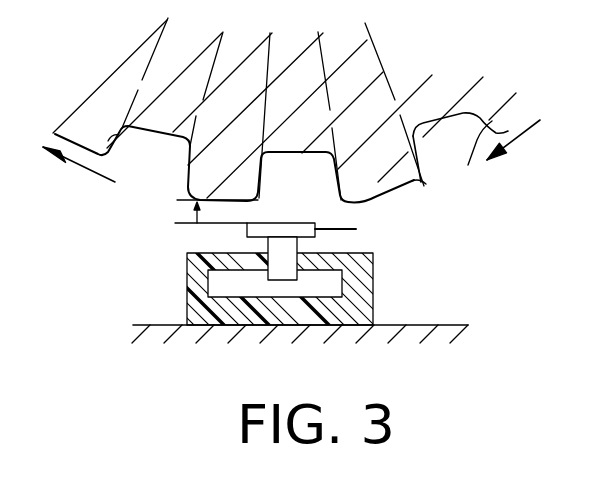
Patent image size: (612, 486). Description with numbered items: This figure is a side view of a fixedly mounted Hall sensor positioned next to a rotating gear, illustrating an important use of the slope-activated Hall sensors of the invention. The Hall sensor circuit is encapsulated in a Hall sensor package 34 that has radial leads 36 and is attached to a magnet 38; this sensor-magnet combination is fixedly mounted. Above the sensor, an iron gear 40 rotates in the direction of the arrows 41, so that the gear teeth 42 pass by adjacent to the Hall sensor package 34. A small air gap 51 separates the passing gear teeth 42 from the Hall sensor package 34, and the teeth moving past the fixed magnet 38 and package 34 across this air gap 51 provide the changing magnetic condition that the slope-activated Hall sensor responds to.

The Hall sensor package 34 is at (302, 222).
The radial leads 36 is at (356, 229).
The magnet 38 is at (293, 281).
The iron gear 40 is at (248, 138).
The arrows 41 is at (80, 167).
The gear teeth 42 is at (113, 147).
The air gap 51 is at (188, 230).